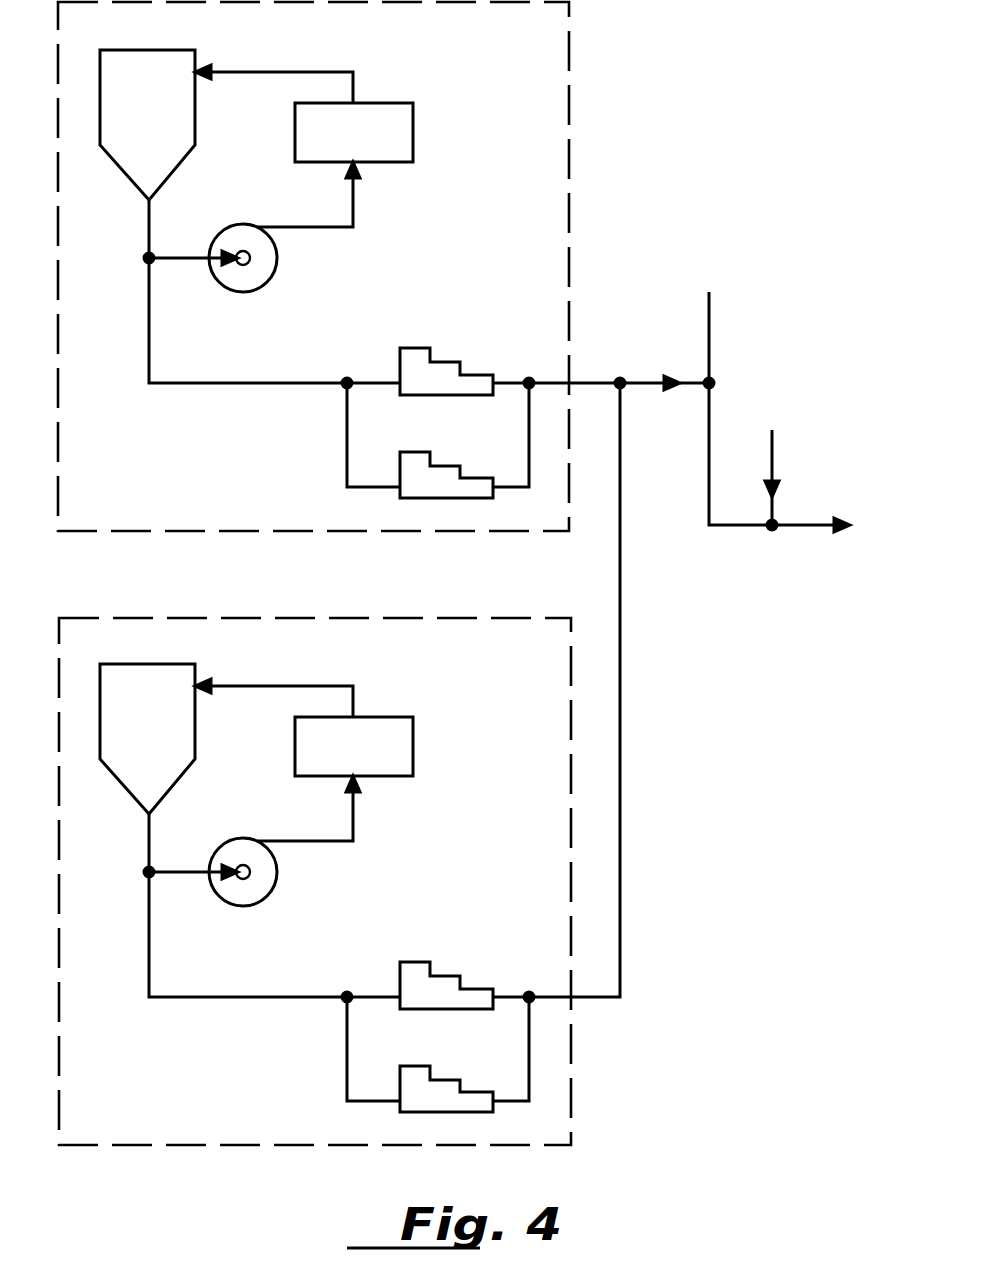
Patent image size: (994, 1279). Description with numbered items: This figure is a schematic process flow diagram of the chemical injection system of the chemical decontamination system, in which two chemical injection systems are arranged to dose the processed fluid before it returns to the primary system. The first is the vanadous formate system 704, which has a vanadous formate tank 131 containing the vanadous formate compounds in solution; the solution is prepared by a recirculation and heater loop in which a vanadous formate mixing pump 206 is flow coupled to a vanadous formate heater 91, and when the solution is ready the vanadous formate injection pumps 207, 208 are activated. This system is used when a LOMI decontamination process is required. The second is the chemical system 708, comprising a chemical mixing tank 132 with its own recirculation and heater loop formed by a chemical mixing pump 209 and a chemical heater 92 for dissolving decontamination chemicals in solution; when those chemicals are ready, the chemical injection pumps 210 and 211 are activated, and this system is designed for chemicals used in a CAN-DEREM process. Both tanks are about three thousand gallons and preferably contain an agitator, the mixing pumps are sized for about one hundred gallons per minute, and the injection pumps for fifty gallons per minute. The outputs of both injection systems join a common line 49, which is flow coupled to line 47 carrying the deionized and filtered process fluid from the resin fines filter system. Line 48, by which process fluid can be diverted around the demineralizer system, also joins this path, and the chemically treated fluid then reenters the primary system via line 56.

The vanadous formate system 704 is at (570, 127).
The chemical system 708 is at (437, 618).
The vanadous formate tank 131 is at (162, 117).
The chemical mixing tank 132 is at (167, 724).
The vanadous formate heater 91 is at (413, 137).
The chemical heater 92 is at (413, 745).
The vanadous formate mixing pump 206 is at (265, 267).
The chemical mixing pump 209 is at (266, 879).
The vanadous formate injection pump 207 is at (442, 368).
The vanadous formate injection pump 208 is at (439, 478).
The chemical injection pump 210 is at (438, 982).
The chemical injection pump 211 is at (436, 1088).
The line 49 is at (647, 382).
The line 47 is at (712, 325).
The line 48 is at (772, 447).
The line 56 is at (825, 526).